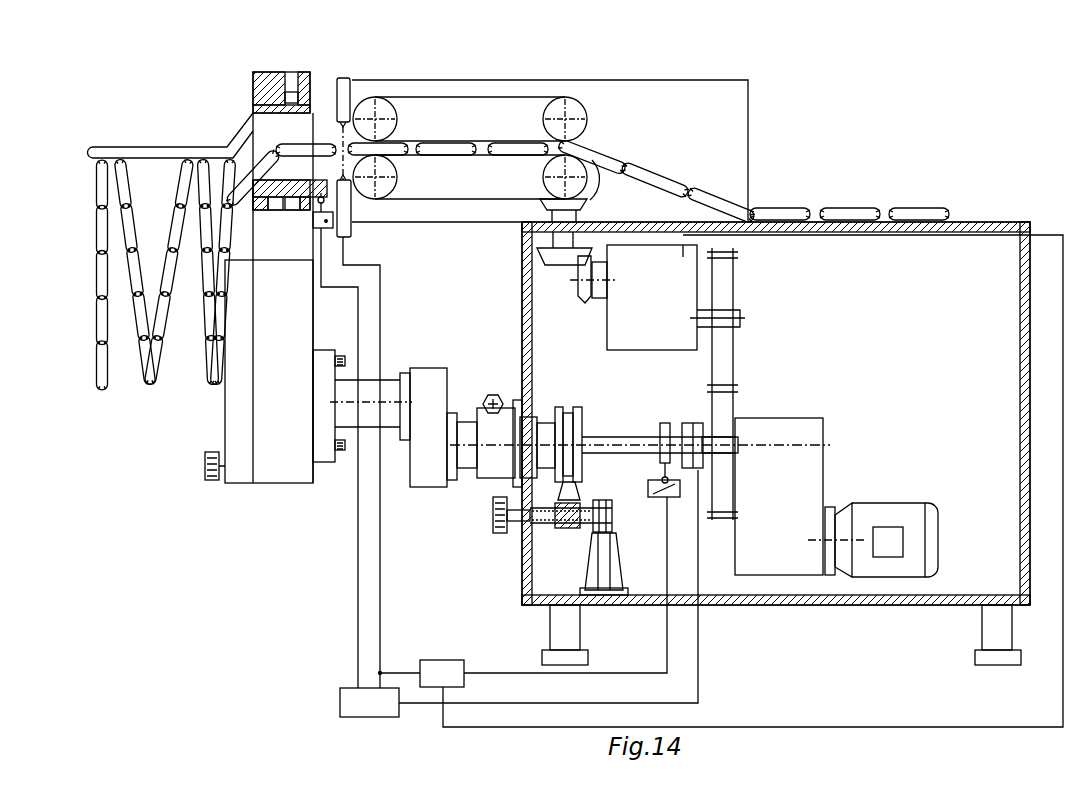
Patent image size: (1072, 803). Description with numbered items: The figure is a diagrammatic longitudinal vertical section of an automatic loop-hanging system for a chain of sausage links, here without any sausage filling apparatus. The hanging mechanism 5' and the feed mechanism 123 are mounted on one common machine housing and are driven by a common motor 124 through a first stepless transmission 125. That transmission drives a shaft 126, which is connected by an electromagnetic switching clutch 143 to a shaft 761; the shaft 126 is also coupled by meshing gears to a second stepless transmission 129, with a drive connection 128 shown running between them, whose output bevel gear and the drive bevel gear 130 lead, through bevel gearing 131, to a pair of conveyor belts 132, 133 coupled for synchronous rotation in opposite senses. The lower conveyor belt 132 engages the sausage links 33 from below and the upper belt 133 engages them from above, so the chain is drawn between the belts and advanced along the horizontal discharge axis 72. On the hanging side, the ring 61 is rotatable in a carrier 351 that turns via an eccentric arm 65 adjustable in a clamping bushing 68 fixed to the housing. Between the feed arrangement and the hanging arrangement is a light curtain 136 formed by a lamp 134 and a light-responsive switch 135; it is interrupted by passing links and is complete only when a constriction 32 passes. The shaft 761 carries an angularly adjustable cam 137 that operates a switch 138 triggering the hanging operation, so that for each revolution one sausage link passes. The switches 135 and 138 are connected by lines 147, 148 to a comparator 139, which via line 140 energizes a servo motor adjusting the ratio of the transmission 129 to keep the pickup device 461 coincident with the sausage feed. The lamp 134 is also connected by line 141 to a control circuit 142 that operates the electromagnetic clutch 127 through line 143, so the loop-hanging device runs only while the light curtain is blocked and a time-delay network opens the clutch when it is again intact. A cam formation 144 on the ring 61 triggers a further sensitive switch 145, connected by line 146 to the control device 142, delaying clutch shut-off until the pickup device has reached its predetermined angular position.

The pickup device 461 is at (196, 103).
The hanging mechanism 5' is at (155, 455).
The ring 61 is at (292, 107).
The cam formation 144 is at (320, 160).
The carrier 351 is at (287, 491).
The eccentric arm 65 is at (446, 394).
The clamping bushing 68 is at (482, 490).
The light source 134 is at (345, 79).
The light curtain 136 is at (338, 128).
The light-responsive switch 135 is at (354, 235).
The sensitive switch 145 is at (318, 230).
The conveyor belt 133 is at (498, 105).
The conveyor belt 132 is at (463, 187).
The bevel gearing 131 is at (592, 174).
The feed mechanism 123 is at (688, 74).
The sausage links 33 is at (405, 142).
The constriction between sausage links 32 is at (450, 142).
The horizontal discharge axis 72 is at (510, 143).
The bevel gears 130 is at (578, 270).
The second stepless transmission 129 is at (655, 348).
The drive belt 128 is at (726, 400).
The shaft 126 is at (706, 470).
The electromagnetic clutch 127 is at (700, 424).
The cam 137 is at (665, 421).
The shaft 761 is at (615, 458).
The switch 138 is at (660, 496).
The first stepless transmission 125 is at (823, 456).
The motor 124 is at (895, 506).
The line 146 is at (360, 577).
The line 147 is at (380, 603).
The line 141 is at (393, 672).
The comparator 139 is at (446, 665).
The line 148 is at (618, 663).
The control circuit 142 is at (375, 717).
The line 143 is at (700, 683).
The line 140 is at (501, 730).